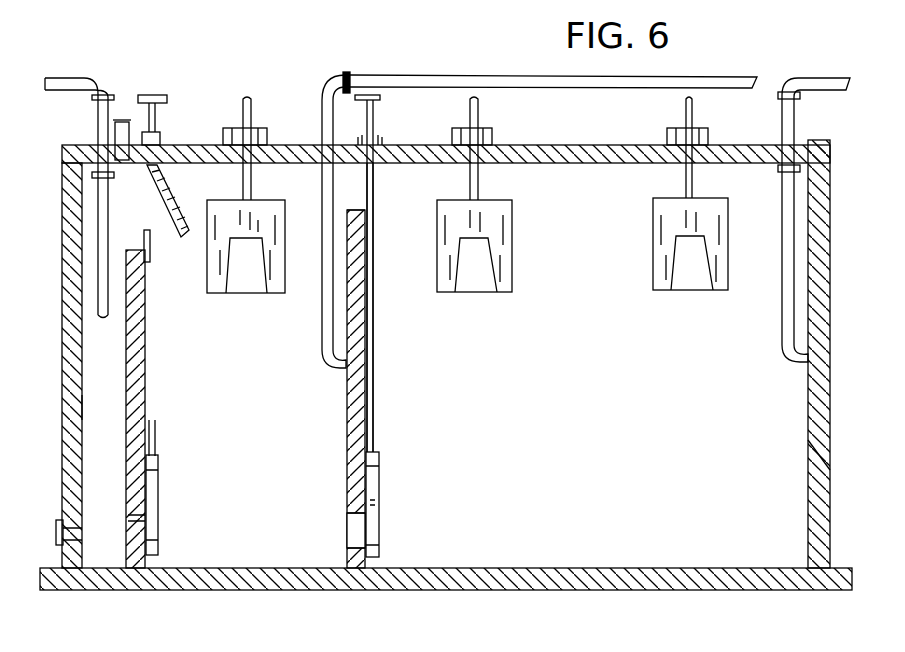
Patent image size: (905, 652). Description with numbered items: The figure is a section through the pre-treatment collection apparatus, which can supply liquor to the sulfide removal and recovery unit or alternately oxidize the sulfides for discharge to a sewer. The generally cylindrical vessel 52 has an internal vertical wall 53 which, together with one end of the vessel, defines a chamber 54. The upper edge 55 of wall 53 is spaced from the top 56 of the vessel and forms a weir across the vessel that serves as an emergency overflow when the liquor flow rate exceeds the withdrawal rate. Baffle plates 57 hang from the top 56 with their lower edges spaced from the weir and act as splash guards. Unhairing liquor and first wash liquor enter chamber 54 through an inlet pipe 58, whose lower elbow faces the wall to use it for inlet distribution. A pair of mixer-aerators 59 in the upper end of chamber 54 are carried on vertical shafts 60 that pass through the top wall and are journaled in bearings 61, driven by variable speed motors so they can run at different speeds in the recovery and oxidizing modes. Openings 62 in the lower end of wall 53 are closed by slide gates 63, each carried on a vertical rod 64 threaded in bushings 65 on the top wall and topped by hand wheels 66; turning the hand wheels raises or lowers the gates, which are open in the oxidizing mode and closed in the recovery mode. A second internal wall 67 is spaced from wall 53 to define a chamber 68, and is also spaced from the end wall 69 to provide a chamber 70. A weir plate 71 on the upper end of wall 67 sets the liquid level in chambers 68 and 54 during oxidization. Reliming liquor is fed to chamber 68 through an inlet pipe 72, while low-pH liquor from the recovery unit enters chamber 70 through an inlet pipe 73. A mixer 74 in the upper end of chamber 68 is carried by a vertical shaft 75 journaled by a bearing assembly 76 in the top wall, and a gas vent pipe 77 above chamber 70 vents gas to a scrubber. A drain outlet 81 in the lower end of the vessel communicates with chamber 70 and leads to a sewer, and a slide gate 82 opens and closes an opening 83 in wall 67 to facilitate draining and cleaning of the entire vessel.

The vessel 52 is at (833, 290).
The internal vertical wall 53 is at (356, 408).
The chamber 54 is at (812, 456).
The upper edge of wall 55 is at (364, 214).
The top 56 is at (583, 150).
The baffle plate 57 is at (183, 238).
The inlet pipe 58 is at (795, 239).
The mixer-aerators 59 is at (653, 235).
The vertical shafts 60 is at (480, 188).
The bearings 61 is at (490, 132).
The openings 62 is at (356, 515).
The slide gates 63 is at (380, 462).
The vertical rod 64 is at (375, 395).
The bushings 65 is at (362, 133).
The hand wheels 66 is at (372, 95).
The second internal wall 67 is at (140, 416).
The chamber 68 is at (228, 547).
The end wall 69 is at (72, 346).
The chamber 70 is at (95, 406).
The weir plate 71 is at (146, 240).
The inlet pipe 72 is at (327, 298).
The inlet pipe 73 is at (108, 115).
The mixer 74 is at (222, 282).
The vertical shaft 75 is at (242, 100).
The bearing assembly 76 is at (224, 135).
The gas vent pipe 77 is at (122, 122).
The drain outlet 81 is at (58, 529).
The slide gate 82 is at (160, 502).
The opening 83 is at (128, 520).